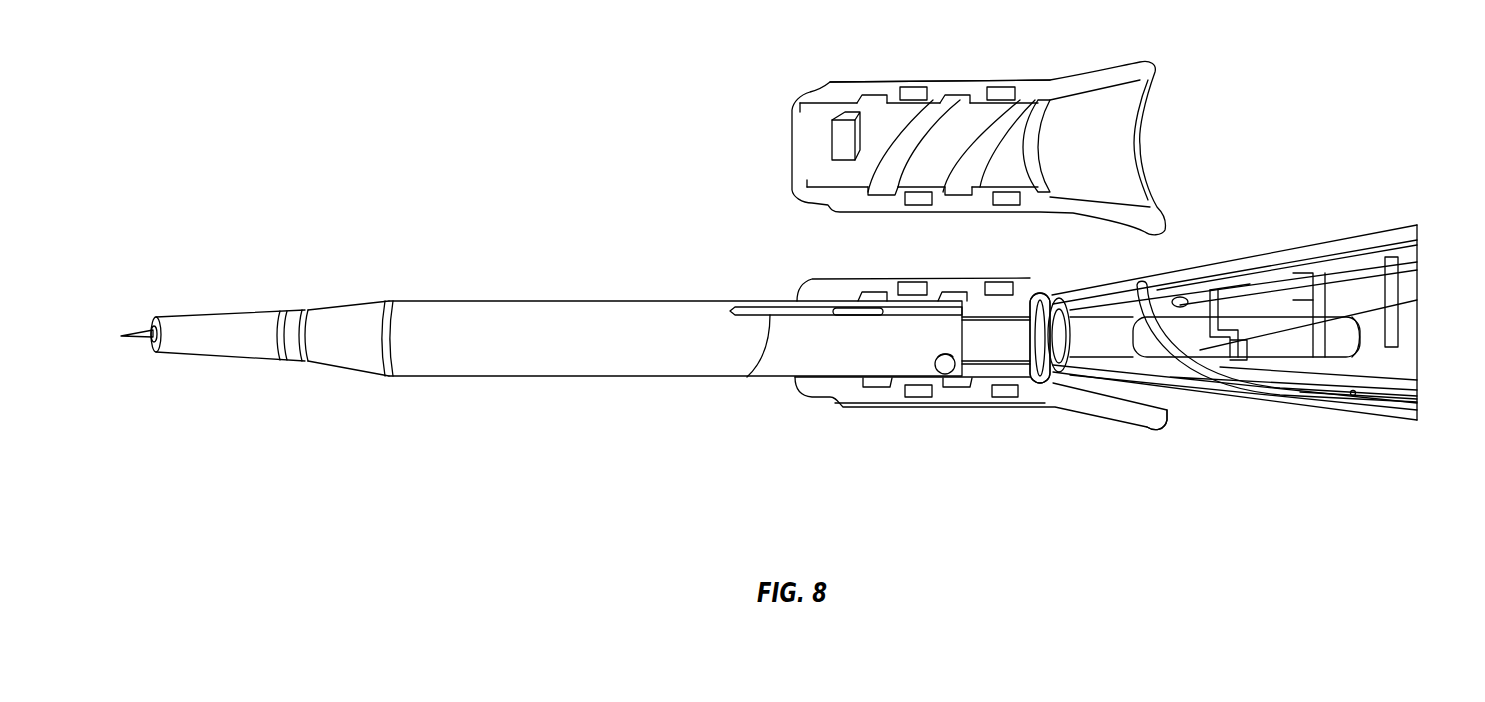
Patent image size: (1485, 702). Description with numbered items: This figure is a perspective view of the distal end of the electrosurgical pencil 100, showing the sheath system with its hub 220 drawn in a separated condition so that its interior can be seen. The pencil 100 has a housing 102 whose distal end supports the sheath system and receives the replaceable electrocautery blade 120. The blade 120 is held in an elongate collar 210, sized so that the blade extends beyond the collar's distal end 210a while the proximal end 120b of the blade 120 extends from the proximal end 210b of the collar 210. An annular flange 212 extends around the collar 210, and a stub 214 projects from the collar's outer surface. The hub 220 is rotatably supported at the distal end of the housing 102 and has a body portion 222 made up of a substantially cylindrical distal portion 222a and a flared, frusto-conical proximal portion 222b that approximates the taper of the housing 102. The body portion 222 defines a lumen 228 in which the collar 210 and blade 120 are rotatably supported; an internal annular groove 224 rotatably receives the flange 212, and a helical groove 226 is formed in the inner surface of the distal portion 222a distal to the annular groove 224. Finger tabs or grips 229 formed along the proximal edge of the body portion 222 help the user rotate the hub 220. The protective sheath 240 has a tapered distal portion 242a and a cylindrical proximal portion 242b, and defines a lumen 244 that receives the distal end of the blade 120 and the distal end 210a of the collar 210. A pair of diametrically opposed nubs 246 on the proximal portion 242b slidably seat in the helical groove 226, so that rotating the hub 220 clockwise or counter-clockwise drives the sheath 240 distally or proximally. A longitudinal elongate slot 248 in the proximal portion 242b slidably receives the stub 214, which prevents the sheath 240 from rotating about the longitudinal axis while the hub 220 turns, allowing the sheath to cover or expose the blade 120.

The electrosurgical pencil 100 is at (1315, 232).
The housing 102 is at (1262, 258).
The electrocautery blade 120 is at (1283, 357).
The proximal end of electrocautery blade 120b is at (1355, 395).
The collar 210 is at (998, 307).
The distal end of collar 210a is at (980, 322).
The proximal end of collar 210b is at (1127, 355).
The annular flange 212 is at (1045, 295).
The stub 214 is at (845, 312).
The hub 220 is at (932, 47).
The body portion 222 is at (1127, 430).
The distal portion 222a is at (840, 406).
The proximal portion 222b is at (893, 80).
The annular groove 224 is at (1037, 100).
The helical groove 226 is at (987, 147).
The lumen 228 is at (812, 145).
The finger tabs or grips 229 is at (1147, 428).
The protective sheath 240 is at (515, 298).
The tapered distal portion 242a is at (225, 362).
The cylindrical proximal portion 242b is at (452, 376).
The lumen 244 is at (151, 330).
The nub 246 is at (953, 374).
The elongate slot 248 is at (747, 377).